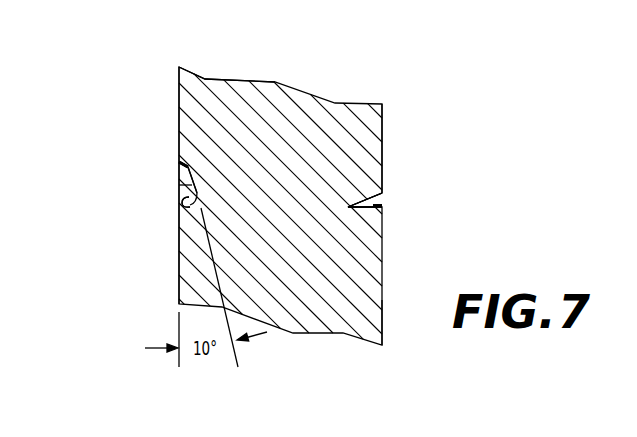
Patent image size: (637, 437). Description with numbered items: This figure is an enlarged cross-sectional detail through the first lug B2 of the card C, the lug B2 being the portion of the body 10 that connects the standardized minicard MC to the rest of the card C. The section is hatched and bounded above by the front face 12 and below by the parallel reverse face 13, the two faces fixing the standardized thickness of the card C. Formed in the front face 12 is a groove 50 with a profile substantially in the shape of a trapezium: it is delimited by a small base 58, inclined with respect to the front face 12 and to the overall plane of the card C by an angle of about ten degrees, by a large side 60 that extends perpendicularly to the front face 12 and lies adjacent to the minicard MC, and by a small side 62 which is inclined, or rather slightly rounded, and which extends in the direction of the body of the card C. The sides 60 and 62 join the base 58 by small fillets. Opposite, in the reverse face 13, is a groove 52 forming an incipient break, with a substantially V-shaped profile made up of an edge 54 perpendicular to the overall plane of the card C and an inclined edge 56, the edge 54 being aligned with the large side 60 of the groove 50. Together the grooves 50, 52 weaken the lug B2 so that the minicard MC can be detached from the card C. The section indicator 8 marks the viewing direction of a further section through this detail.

The body 10 is at (309, 300).
The front face 12 is at (178, 93).
The reverse face 13 is at (382, 130).
The first lug B2 is at (282, 202).
The section line 8- 8 is at (103, 198).
The groove 50 is at (158, 176).
The small side 62 is at (178, 165).
The base 58 is at (192, 185).
The large side 60 is at (180, 200).
The minicard MC is at (168, 288).
The inclined edge 56 is at (383, 196).
The edge 54 is at (383, 205).
The groove 52 is at (406, 203).
The card C is at (391, 327).